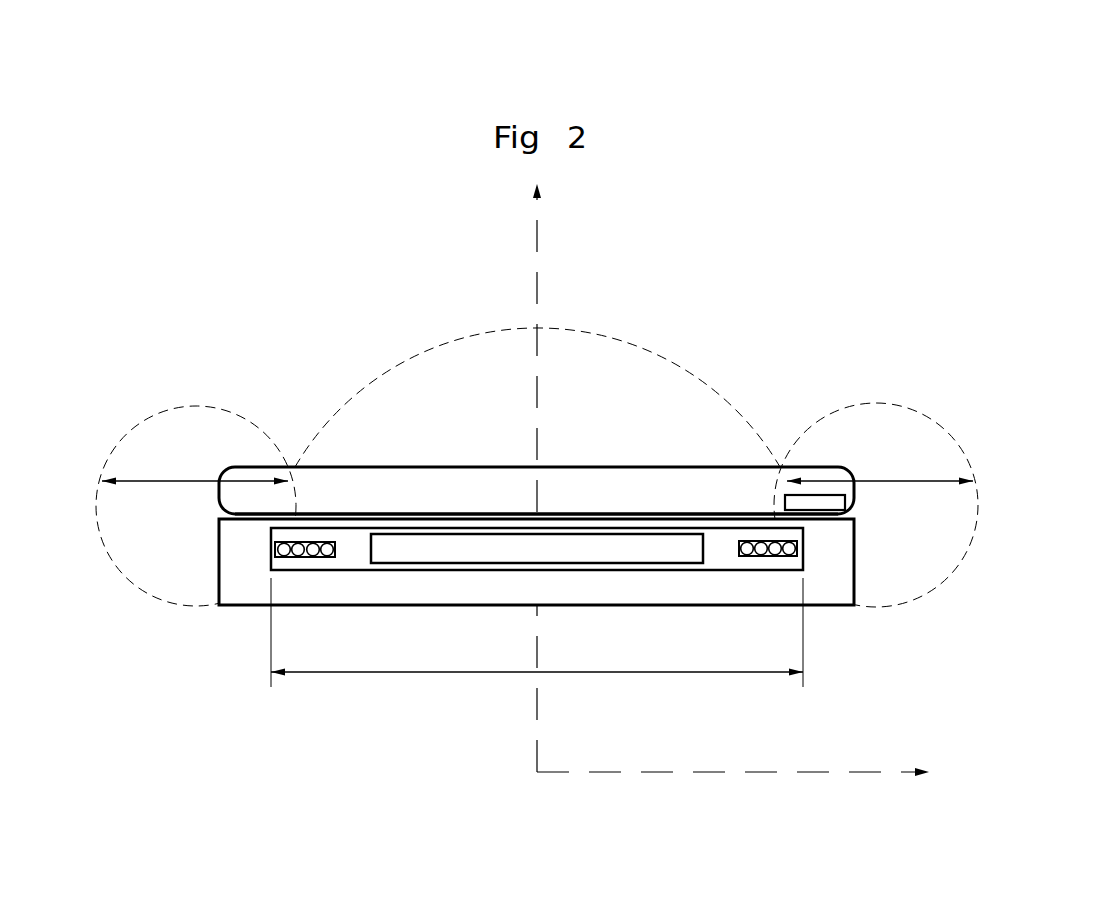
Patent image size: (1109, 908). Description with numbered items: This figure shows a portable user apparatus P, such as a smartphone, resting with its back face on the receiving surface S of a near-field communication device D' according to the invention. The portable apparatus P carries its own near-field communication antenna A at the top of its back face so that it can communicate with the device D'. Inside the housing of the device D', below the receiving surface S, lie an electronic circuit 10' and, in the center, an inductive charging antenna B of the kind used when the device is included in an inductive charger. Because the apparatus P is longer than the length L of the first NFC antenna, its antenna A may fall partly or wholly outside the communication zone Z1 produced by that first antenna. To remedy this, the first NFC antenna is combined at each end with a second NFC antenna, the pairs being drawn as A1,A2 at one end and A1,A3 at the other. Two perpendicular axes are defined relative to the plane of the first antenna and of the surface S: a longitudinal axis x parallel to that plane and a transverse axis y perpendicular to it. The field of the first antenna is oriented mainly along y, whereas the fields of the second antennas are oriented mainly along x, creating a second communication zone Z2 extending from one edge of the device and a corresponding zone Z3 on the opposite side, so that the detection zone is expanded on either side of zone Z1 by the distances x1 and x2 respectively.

The communication zone Z1 is at (642, 348).
The second communication zone Z2 is at (150, 413).
The third detection zone Z3 is at (880, 400).
The receiving surface S is at (248, 517).
The portable user apparatus P is at (735, 467).
The near-field communication antenna A is at (845, 503).
The near-field communication device D' is at (593, 566).
The electronic board 10' is at (537, 630).
The inductive charging antenna B is at (590, 553).
The first NFC antenna and second NFC antenna A1,A2 is at (298, 557).
The first NFC antenna and second NFC antenna A1,A3 is at (773, 556).
The distance x1 is at (195, 466).
The distance x2 is at (880, 466).
The length of the first NFC antenna L is at (537, 632).
The longitudinal axis x is at (733, 792).
The transverse axis y is at (518, 478).